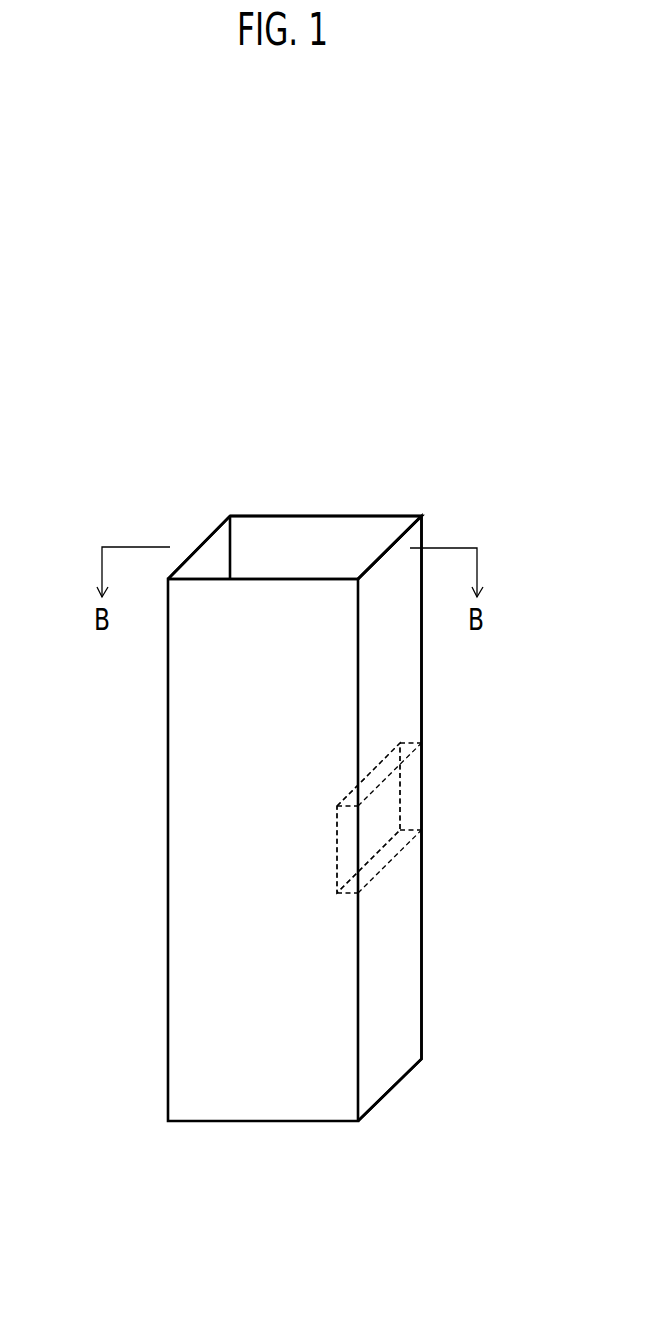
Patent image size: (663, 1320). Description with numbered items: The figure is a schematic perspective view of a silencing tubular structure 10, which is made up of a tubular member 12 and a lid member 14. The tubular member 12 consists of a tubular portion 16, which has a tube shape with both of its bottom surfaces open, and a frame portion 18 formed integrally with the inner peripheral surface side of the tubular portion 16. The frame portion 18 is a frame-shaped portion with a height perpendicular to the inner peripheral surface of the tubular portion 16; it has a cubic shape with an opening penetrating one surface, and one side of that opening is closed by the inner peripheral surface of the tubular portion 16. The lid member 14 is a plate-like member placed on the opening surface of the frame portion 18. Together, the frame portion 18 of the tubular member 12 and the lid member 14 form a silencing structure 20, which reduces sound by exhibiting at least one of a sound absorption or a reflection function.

The silencing tubular structure 10 is at (533, 438).
The tubular member 12 is at (269, 423).
The lid member 14 is at (337, 842).
The tubular portion 16 is at (283, 516).
The frame portion 18 is at (390, 770).
The silencing structure 20 is at (338, 773).